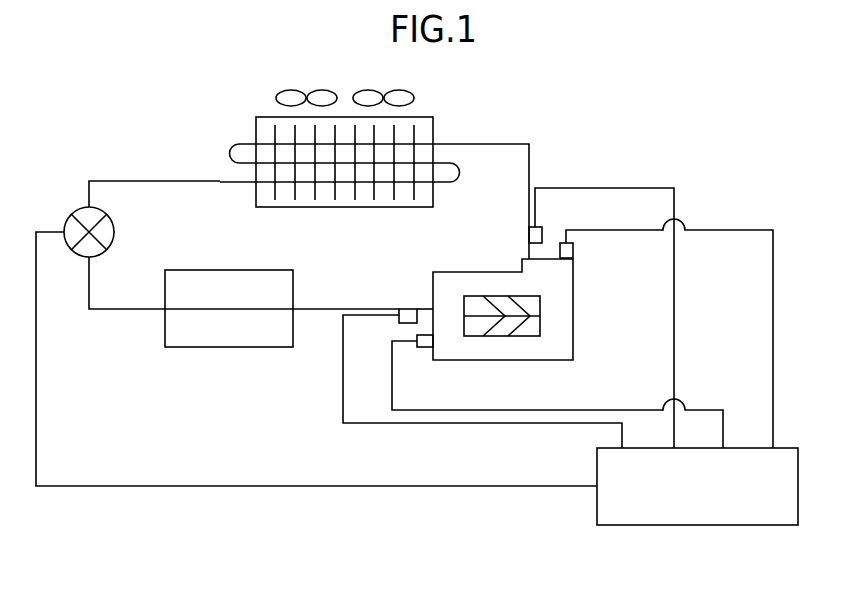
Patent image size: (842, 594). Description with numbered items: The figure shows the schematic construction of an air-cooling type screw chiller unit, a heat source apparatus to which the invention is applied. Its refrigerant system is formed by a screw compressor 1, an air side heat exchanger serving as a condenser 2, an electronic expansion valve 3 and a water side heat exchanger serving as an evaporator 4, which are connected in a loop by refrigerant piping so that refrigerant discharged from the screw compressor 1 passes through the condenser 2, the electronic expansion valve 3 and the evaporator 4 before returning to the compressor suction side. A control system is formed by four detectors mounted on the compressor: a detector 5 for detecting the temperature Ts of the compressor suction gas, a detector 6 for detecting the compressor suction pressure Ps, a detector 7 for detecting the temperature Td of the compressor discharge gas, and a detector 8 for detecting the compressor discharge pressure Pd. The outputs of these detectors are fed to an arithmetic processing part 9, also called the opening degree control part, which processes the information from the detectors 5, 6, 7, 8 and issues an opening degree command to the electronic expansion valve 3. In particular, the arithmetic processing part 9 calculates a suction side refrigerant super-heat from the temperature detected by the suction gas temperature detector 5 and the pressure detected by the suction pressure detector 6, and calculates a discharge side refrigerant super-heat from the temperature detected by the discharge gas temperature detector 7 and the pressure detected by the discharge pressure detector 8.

The screw compressor 1 is at (573, 322).
The air side heat exchanger (condenser) 2 is at (343, 208).
The electronic expansion valve 3 is at (114, 233).
The water side heat exchanger (evaporator) 4 is at (230, 347).
The compressor suction gas temperature detector 5 is at (407, 323).
The compressor suction pressure detector 6 is at (425, 347).
The compressor discharge gas temperature detector 7 is at (542, 235).
The compressor discharge pressure detector 8 is at (573, 252).
The arithmetic processing part (opening degree control part) 9 is at (697, 525).